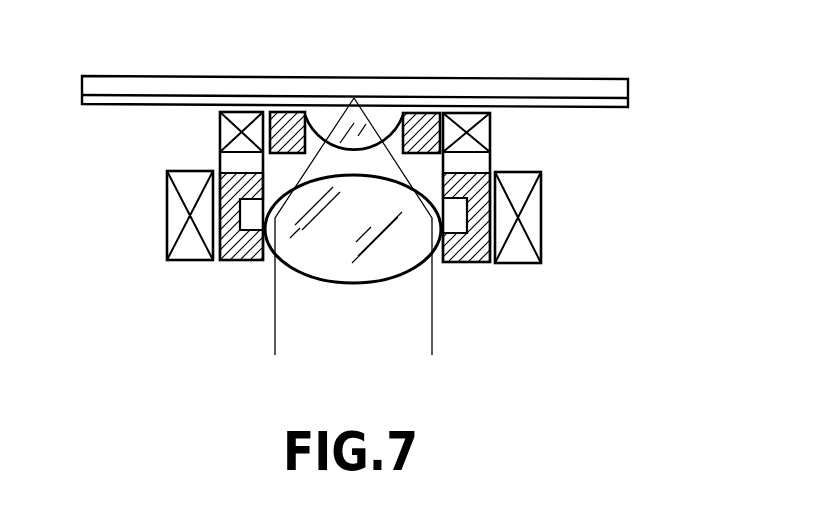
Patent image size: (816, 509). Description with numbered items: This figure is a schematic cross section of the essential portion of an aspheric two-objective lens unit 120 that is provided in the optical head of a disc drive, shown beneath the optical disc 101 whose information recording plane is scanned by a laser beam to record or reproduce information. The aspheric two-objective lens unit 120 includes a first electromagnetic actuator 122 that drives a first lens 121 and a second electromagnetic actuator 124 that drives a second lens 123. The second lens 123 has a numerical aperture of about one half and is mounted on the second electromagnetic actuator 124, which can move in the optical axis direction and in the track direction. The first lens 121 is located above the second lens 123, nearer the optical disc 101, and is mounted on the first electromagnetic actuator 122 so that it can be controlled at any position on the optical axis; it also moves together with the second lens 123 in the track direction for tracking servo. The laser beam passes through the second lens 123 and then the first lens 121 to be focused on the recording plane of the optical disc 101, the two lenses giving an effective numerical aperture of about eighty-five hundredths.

The optical disc 101 is at (210, 76).
The aspheric two-objective lens unit 120 is at (397, 205).
The first lens 121 is at (388, 122).
The first electromagnetic actuator 122 is at (482, 134).
The second lens 123 is at (413, 255).
The second electromagnetic actuator 124 is at (530, 222).